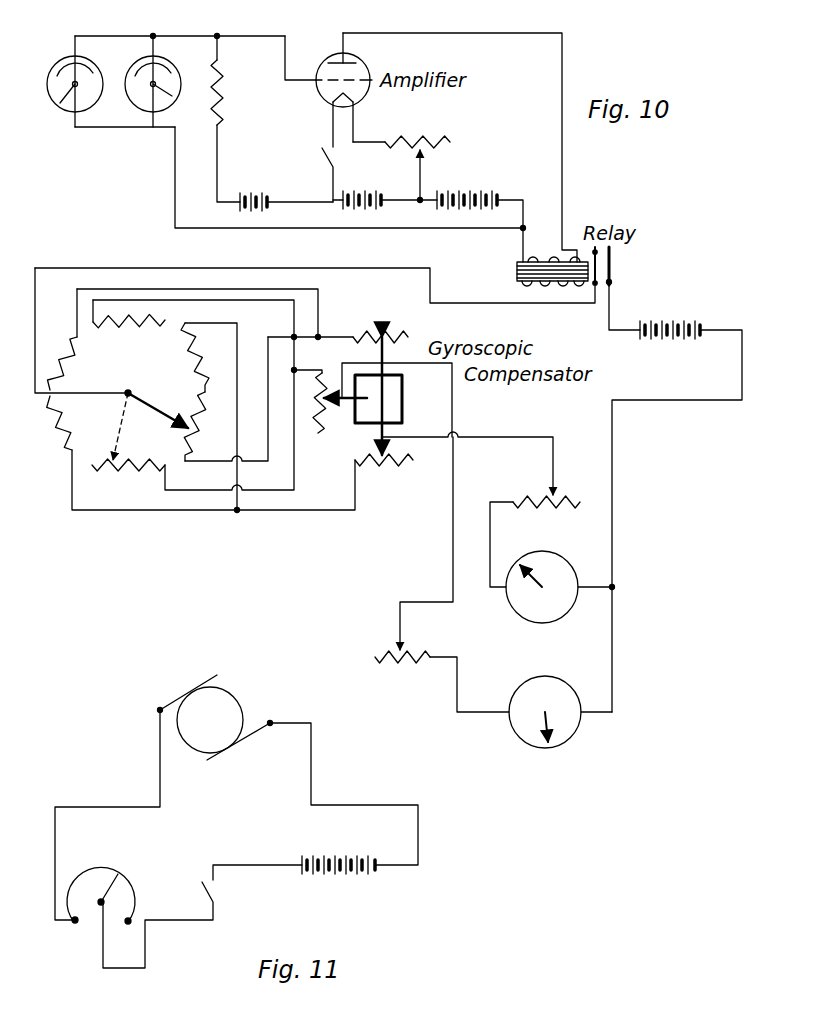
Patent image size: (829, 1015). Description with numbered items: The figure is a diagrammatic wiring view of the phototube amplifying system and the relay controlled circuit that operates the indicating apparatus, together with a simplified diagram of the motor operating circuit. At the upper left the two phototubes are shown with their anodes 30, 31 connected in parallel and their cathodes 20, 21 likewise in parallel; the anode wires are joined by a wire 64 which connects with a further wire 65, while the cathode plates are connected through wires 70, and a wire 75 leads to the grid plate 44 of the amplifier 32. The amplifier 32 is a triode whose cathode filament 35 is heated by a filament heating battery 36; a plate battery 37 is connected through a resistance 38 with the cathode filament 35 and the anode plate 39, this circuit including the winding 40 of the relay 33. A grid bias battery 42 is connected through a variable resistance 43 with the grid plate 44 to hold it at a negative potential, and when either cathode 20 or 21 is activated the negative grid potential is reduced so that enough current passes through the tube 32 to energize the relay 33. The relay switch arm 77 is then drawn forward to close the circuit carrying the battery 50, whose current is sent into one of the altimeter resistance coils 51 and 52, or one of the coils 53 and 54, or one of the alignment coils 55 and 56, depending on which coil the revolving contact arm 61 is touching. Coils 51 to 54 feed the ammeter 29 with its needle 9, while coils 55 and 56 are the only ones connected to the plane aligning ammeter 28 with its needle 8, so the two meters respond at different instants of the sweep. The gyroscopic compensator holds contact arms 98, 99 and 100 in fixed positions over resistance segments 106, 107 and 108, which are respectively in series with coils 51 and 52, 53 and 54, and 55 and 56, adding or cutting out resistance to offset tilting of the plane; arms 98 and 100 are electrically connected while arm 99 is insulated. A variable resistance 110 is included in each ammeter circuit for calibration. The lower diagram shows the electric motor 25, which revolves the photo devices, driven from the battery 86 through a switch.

In FIG. 10, the cathode 20 is at (58, 62).
In FIG. 10, the cathode 21 is at (146, 62).
In FIG. 10, the anode 30 is at (60, 106).
In FIG. 10, the anode 31 is at (172, 96).
In FIG. 10, the wires 70 is at (110, 36).
In FIG. 10, the wire 75 is at (268, 36).
In FIG. 10, the wire 64 is at (135, 128).
In FIG. 10, the wire 65 is at (174, 224).
In FIG. 10, the variable resistance 43 is at (223, 96).
In FIG. 10, the grid bias battery 42 is at (246, 195).
In FIG. 10, the amplifier 32 is at (366, 66).
In FIG. 10, the anode plate 39 is at (336, 58).
In FIG. 10, the grid plate 44 is at (327, 70).
In FIG. 10, the cathode filament 35 is at (330, 100).
In FIG. 10, the filament heating battery 36 is at (366, 193).
In FIG. 10, the plate battery 37 is at (465, 193).
In FIG. 10, the resistance 38 is at (436, 138).
In FIG. 10, the relay 33 is at (546, 260).
In FIG. 10, the winding 40 is at (558, 286).
In FIG. 10, the relay switch arm 77 is at (614, 262).
In FIG. 10, the battery 50 is at (664, 321).
In FIG. 10, the altimeter resistance coil 51 is at (78, 381).
In FIG. 10, the altimeter resistance coil 52 is at (194, 430).
In FIG. 10, the resistance coil 53 is at (52, 439).
In FIG. 10, the resistance coil 54 is at (204, 374).
In FIG. 10, the alignment coil 55 is at (134, 477).
In FIG. 10, the alignment coil 56 is at (128, 328).
In FIG. 10, the contact arm 61 is at (172, 408).
In FIG. 10, the resistance segment 106 is at (382, 336).
In FIG. 10, the contact arm 98 is at (388, 369).
In FIG. 10, the contact arm 99 is at (327, 404).
In FIG. 10, the contact arm 100 is at (392, 448).
In FIG. 10, the resistance segment 108 is at (314, 416).
In FIG. 10, the resistance segment 107 is at (378, 466).
In FIG. 10, the variable resistance 110 is at (580, 494).
In FIG. 10, the ammeter 29 is at (564, 570).
In FIG. 10, the needle 9 is at (532, 571).
In FIG. 10, the ammeter 28 is at (570, 700).
In FIG. 10, the needle 8 is at (554, 727).
In FIG. 11, the electric motor 25 is at (240, 708).
In FIG. 11, the battery 86 is at (362, 882).